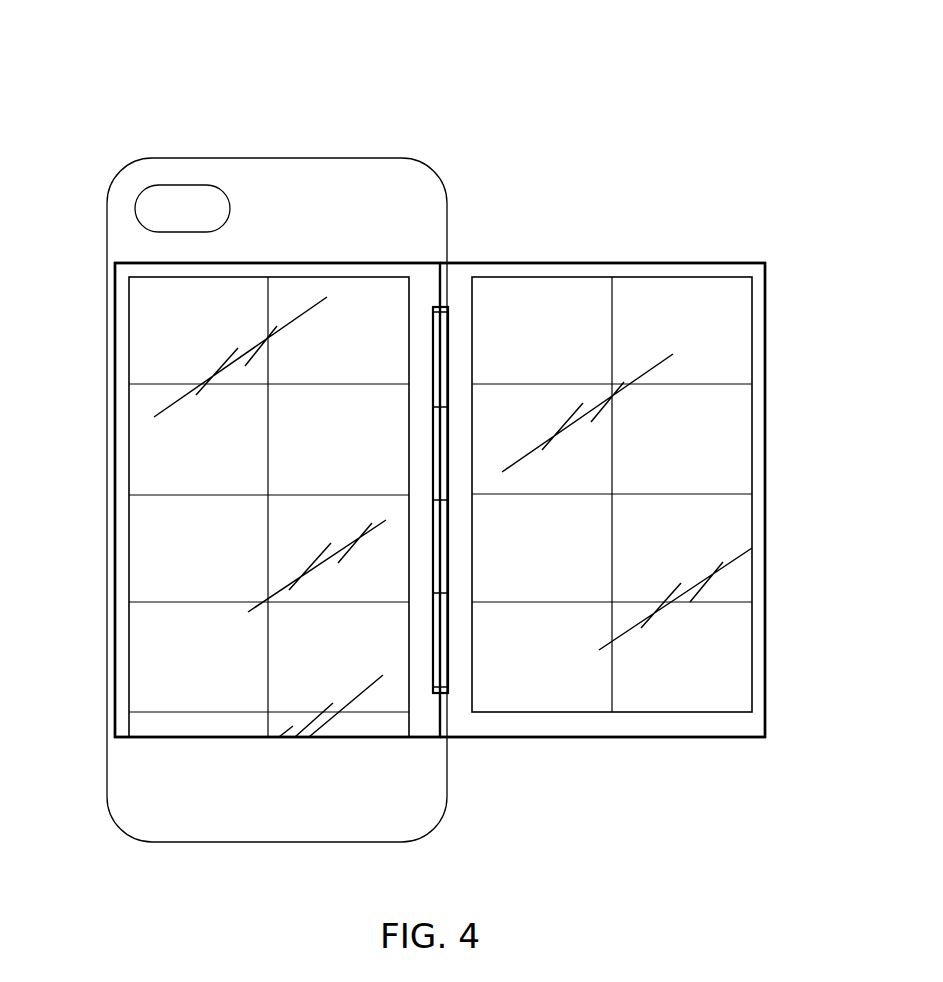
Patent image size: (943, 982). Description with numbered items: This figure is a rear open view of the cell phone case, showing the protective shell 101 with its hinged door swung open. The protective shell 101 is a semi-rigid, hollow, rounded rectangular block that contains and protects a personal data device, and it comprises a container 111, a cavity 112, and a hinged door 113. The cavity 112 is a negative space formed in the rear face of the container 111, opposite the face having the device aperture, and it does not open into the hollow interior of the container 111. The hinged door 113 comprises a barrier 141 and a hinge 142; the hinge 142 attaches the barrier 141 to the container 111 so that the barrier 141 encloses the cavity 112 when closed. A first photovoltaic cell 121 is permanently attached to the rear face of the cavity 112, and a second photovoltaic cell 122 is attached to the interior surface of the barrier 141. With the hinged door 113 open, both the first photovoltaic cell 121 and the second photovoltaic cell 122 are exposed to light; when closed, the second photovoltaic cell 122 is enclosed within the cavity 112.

The protective shell 101 is at (162, 97).
The container 111 is at (385, 167).
The cavity 112 is at (410, 300).
The hinged door 113 is at (675, 232).
The first photovoltaic cell 121 is at (183, 670).
The second photovoltaic cell 122 is at (734, 313).
The barrier 141 is at (612, 263).
The hinge 142 is at (443, 328).